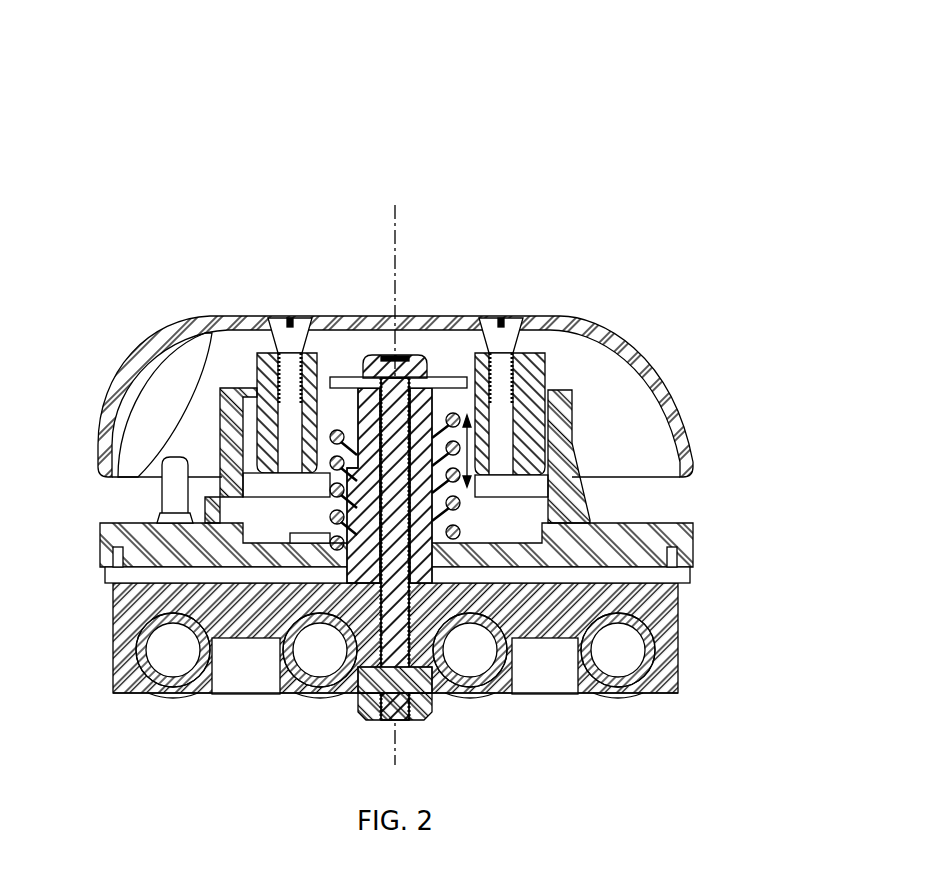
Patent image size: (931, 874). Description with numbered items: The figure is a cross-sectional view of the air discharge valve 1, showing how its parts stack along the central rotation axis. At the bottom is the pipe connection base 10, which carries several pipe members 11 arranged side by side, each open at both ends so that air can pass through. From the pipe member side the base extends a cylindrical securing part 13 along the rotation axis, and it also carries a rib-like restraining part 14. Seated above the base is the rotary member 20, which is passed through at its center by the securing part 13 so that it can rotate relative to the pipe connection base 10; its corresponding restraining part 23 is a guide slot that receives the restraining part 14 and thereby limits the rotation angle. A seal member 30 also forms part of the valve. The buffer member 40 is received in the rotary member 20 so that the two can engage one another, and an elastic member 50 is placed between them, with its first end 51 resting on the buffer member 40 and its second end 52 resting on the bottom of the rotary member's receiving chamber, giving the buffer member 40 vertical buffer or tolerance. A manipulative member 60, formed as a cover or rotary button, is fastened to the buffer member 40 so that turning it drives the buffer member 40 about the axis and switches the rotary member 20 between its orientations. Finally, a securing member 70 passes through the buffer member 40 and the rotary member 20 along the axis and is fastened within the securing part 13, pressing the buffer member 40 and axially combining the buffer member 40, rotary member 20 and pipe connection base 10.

The air discharge valve 1 is at (428, 394).
The pipe connection base 10 is at (674, 693).
The pipe member 11 is at (200, 675).
The securing part 13 is at (424, 501).
The restraining part 14 is at (565, 547).
The rotary member 20 is at (697, 546).
The corresponding restraining part 23 is at (577, 512).
The seal member 30 is at (168, 502).
The buffer member 40 is at (549, 368).
The elastic member 50 is at (326, 513).
The first end 51 is at (452, 413).
The second end 52 is at (461, 531).
The manipulative member 60 is at (668, 368).
The securing member 70 is at (414, 355).